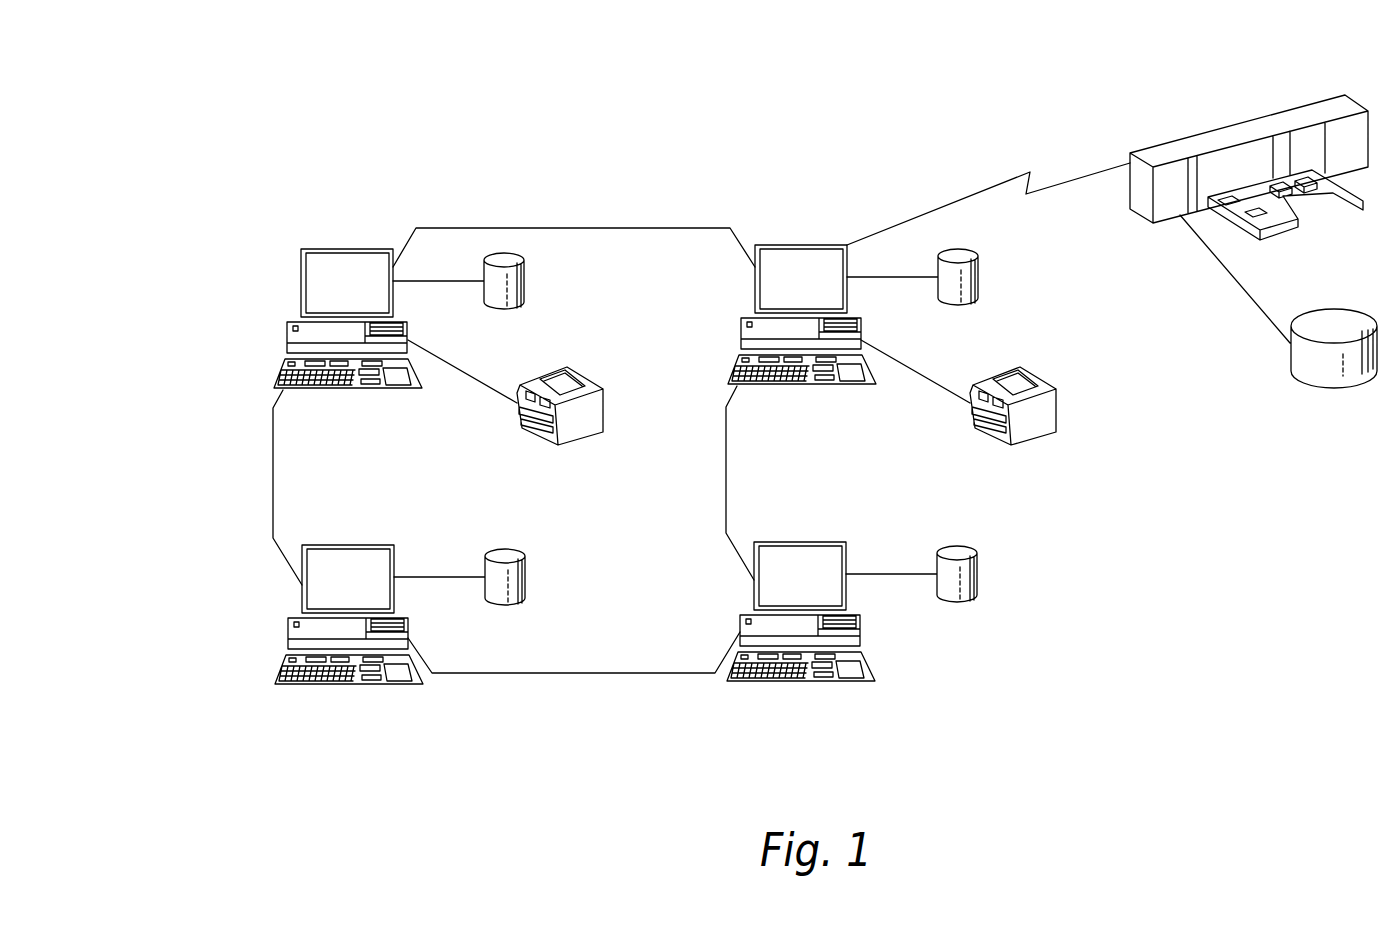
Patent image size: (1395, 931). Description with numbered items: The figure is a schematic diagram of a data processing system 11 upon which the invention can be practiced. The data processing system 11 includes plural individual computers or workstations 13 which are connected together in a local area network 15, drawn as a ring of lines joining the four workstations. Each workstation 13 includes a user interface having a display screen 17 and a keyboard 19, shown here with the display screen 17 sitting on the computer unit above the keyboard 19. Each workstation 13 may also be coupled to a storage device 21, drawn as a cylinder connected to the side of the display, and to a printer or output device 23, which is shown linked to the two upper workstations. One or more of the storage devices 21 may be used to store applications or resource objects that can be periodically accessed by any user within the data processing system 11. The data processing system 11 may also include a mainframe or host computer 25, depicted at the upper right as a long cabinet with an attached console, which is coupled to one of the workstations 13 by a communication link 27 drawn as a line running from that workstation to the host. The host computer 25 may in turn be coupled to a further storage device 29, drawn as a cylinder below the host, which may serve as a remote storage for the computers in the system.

The data processing system 11 is at (518, 179).
The workstation 13 is at (357, 249).
The local area network 15 is at (600, 673).
The display screen 17 is at (313, 277).
The keyboard 19 is at (281, 368).
The storage device 21 is at (525, 270).
The printer 23 is at (537, 432).
The host computer 25 is at (1220, 128).
The communication link 27 is at (1055, 183).
The storage device 29 is at (1325, 377).